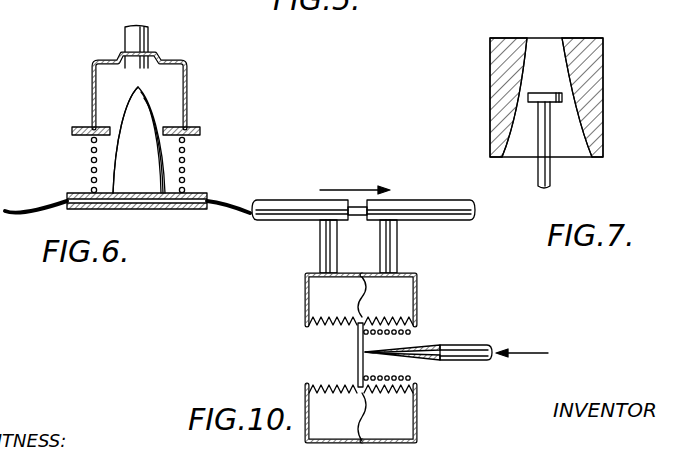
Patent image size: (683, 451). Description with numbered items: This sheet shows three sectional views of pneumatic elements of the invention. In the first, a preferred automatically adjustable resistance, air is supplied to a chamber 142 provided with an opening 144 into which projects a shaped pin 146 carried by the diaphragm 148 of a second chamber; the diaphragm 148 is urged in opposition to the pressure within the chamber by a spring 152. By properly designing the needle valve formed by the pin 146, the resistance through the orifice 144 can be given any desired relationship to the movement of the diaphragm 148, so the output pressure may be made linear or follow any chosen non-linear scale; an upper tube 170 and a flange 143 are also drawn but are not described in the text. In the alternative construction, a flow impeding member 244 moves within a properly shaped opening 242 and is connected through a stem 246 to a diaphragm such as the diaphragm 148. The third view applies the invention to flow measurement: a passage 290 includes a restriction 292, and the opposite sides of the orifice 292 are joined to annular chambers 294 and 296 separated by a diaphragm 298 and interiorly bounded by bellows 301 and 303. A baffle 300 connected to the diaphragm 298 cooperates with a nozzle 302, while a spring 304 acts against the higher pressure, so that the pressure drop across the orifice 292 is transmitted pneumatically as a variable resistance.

In FIG. 6, the tube 170 is at (149, 37).
In FIG. 6, the chamber 142 is at (168, 92).
In FIG. 6, the flange 143 is at (173, 127).
In FIG. 6, the opening 144 is at (115, 128).
In FIG. 6, the pin 146 is at (163, 163).
In FIG. 6, the diaphragm 148 is at (33, 212).
In FIG. 6, the spring 152 is at (92, 158).
In FIG. 7, the opening 242 is at (562, 78).
In FIG. 7, the flow impeding member 244 is at (537, 93).
In FIG. 7, the stem 246 is at (552, 170).
In FIG. 10, the passage 290 is at (290, 200).
In FIG. 10, the restriction 292 is at (355, 205).
In FIG. 10, the chamber 294 is at (310, 297).
In FIG. 10, the chamber 296 is at (403, 297).
In FIG. 10, the diaphragm 298 is at (364, 280).
In FIG. 10, the baffle 300 is at (357, 350).
In FIG. 10, the bellows 301 is at (335, 325).
In FIG. 10, the nozzle 302 is at (428, 345).
In FIG. 10, the bellows 303 is at (398, 318).
In FIG. 10, the spring 304 is at (410, 378).